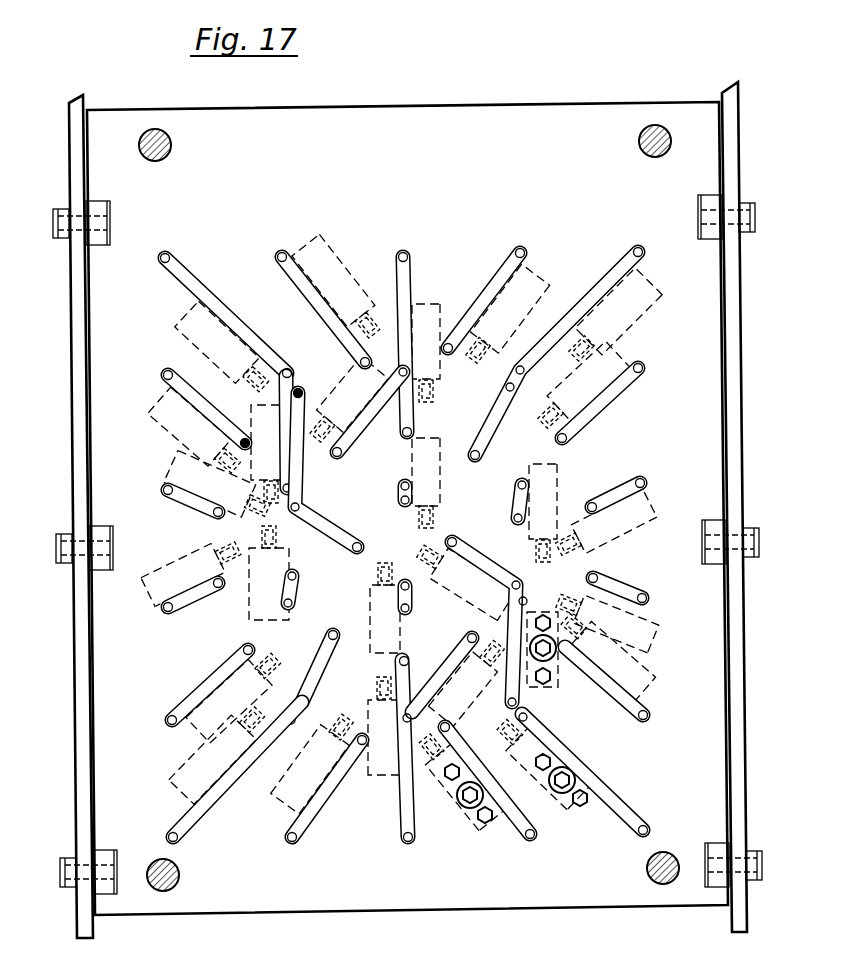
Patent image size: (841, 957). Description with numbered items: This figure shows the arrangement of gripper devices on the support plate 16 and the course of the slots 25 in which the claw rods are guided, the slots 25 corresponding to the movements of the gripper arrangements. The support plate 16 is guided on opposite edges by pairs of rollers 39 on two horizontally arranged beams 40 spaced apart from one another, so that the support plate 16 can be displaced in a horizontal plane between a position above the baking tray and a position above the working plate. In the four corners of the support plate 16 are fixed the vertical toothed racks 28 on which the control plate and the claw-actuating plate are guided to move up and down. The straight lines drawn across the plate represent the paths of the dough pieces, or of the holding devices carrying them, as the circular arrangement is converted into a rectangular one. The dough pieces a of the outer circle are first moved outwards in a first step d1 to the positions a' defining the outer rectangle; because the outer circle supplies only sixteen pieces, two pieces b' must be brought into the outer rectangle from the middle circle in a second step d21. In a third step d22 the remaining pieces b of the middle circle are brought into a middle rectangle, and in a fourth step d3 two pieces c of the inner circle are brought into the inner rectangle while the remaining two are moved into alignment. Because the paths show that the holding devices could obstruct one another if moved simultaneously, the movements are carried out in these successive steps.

The support plate 16 is at (103, 634).
The beams 40 is at (83, 690).
The rollers 39 is at (108, 852).
The toothed racks 28 is at (152, 884).
The slots 25 is at (202, 800).
The first step d1 is at (192, 608).
The fourth step d3 is at (328, 536).
The second step d21 is at (410, 276).
The third step d22 is at (513, 497).
The dough pieces of the outer circle a is at (410, 588).
The dough pieces of the outer rectangle a' is at (409, 551).
The dough pieces of the middle circle b is at (405, 551).
The dough pieces brought into the outer rectangle from the middle circle b' is at (411, 555).
The dough pieces of the inner circle c is at (455, 540).